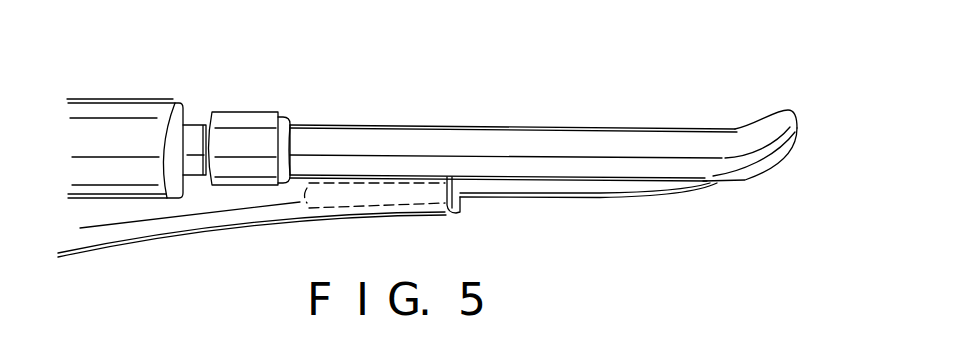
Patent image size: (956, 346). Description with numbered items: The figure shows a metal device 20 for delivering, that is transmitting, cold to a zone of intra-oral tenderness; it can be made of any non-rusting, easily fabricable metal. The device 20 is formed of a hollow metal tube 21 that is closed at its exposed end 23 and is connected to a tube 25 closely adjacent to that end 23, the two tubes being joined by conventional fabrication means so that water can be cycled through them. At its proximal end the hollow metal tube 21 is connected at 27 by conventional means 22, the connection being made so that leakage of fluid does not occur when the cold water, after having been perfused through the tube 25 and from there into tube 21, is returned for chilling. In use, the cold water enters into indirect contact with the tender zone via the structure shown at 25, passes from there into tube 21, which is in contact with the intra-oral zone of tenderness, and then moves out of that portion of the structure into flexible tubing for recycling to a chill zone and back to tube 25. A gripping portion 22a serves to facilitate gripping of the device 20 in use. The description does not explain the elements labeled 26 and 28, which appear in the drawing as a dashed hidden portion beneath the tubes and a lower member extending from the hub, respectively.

The metal device 20 is at (406, 100).
The hollow metal tube 21 is at (467, 138).
The conventional means 22 is at (240, 125).
The gripping portion 22a is at (145, 113).
The exposed end 23 is at (778, 123).
The tube 25 is at (580, 183).
The hidden tube end (dashed) 26 is at (415, 193).
The connection point 27 is at (303, 135).
The rod 28 is at (278, 213).